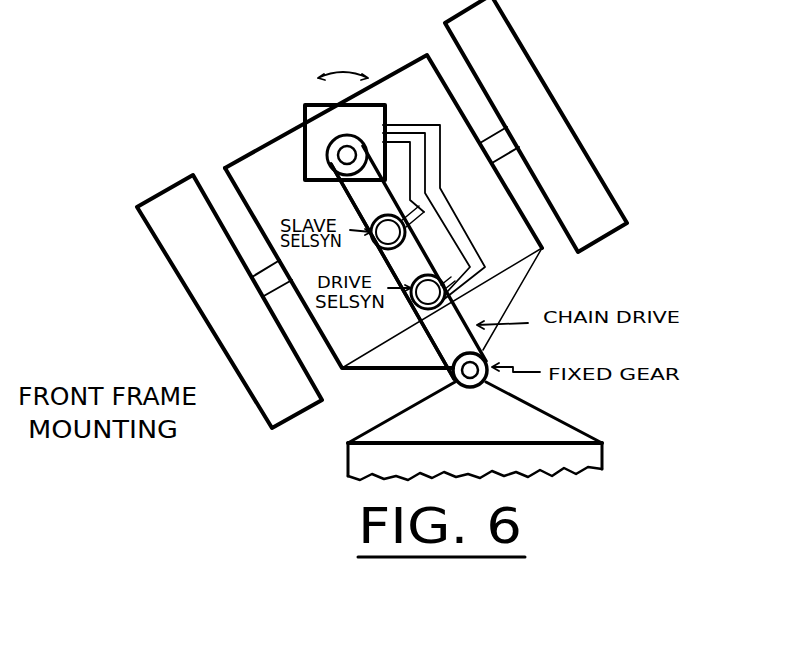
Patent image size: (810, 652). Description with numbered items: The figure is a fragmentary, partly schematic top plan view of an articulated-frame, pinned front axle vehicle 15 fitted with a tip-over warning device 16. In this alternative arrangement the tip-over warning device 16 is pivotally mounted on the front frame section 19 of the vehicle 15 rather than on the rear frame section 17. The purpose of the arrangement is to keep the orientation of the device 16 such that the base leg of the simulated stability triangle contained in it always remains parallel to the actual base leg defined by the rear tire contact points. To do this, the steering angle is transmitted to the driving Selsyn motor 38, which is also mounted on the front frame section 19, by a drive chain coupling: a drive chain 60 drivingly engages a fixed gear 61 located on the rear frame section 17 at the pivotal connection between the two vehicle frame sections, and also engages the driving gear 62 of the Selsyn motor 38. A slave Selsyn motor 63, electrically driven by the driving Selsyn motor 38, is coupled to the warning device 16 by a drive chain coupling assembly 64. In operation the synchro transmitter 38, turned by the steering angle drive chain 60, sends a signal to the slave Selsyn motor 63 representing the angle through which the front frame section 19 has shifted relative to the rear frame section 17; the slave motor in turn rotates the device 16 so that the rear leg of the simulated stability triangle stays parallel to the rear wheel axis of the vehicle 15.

The articulated-frame, pinned front axle vehicle 15 is at (628, 246).
The tip-over warning device 16 is at (305, 117).
The rear frame section 17 is at (603, 452).
The front frame section 19 is at (383, 80).
The driving Selsyn motor 38 is at (410, 311).
The drive chain 60 is at (436, 330).
The fixed gear 61 is at (471, 388).
The driving gear 62 is at (420, 275).
The slave Selsyn motor 63 is at (382, 237).
The drive chain coupling assembly 64 is at (338, 200).